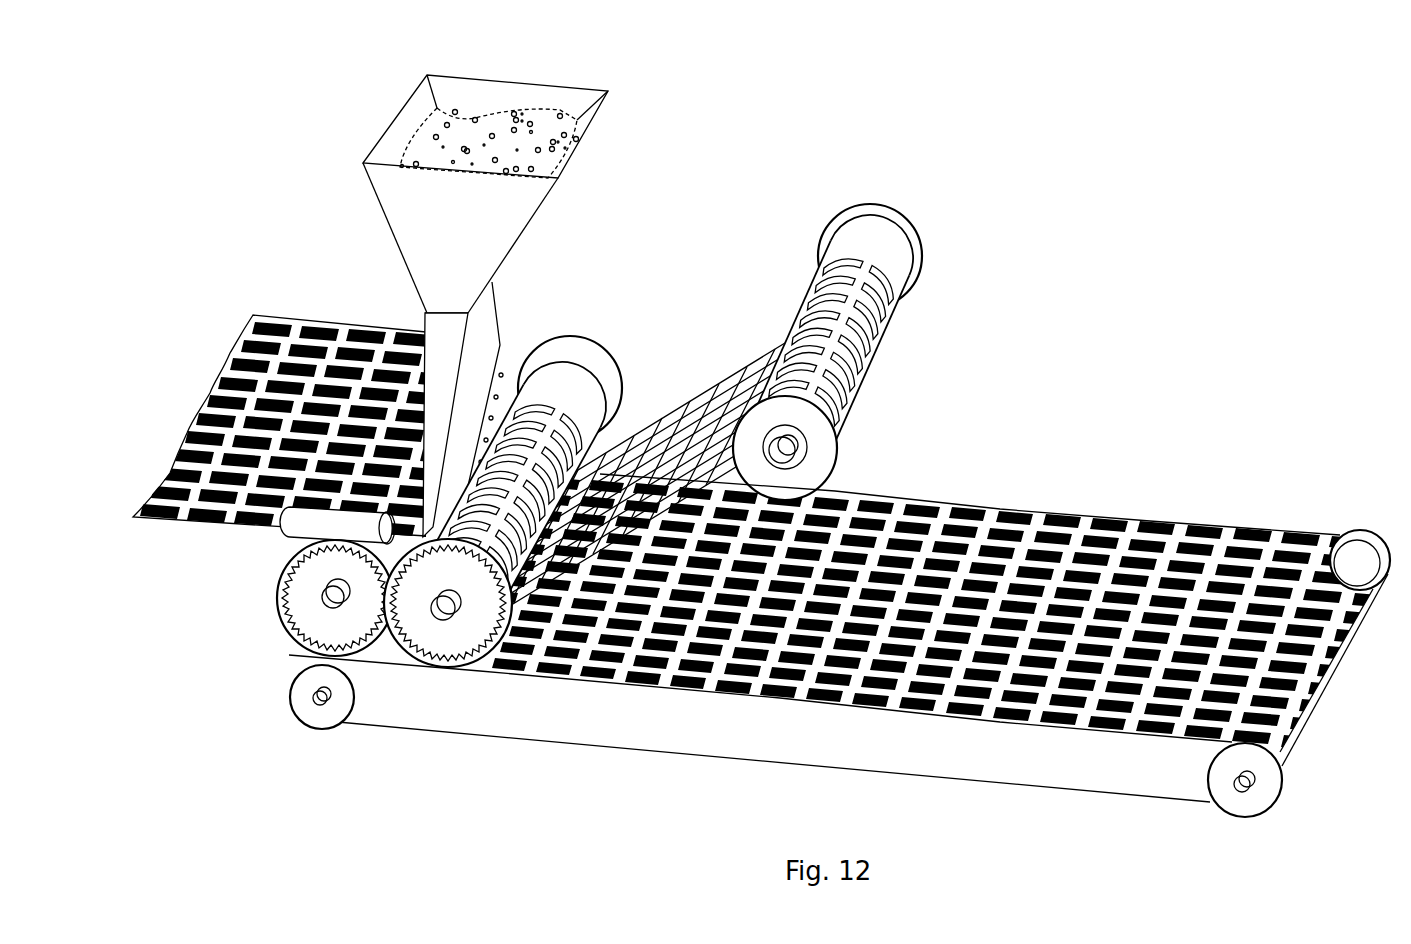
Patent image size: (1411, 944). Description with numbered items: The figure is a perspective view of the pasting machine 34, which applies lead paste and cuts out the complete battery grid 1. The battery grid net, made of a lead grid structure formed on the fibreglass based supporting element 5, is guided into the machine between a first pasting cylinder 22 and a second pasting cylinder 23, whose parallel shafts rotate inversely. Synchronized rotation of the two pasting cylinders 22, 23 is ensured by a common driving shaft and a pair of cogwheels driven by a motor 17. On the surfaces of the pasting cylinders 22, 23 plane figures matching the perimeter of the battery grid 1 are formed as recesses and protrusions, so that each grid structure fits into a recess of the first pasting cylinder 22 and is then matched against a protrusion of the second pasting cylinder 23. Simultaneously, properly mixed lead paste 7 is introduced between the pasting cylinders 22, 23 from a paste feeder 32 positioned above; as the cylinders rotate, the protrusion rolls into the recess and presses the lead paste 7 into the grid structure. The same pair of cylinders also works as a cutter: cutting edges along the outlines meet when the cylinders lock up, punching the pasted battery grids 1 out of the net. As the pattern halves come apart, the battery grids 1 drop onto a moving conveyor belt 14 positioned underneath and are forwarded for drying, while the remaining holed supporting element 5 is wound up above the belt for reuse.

The pasting machine 34 is at (224, 126).
The battery grid 1 is at (283, 387).
The fibreglass based supporting element 5 is at (737, 373).
The lead paste 7 is at (453, 143).
The conveyor belt 14 is at (618, 750).
The motor 17 is at (312, 519).
The first pasting cylinder 22 is at (310, 603).
The second pasting cylinder 23 is at (432, 637).
The paste feeder 32 is at (517, 95).